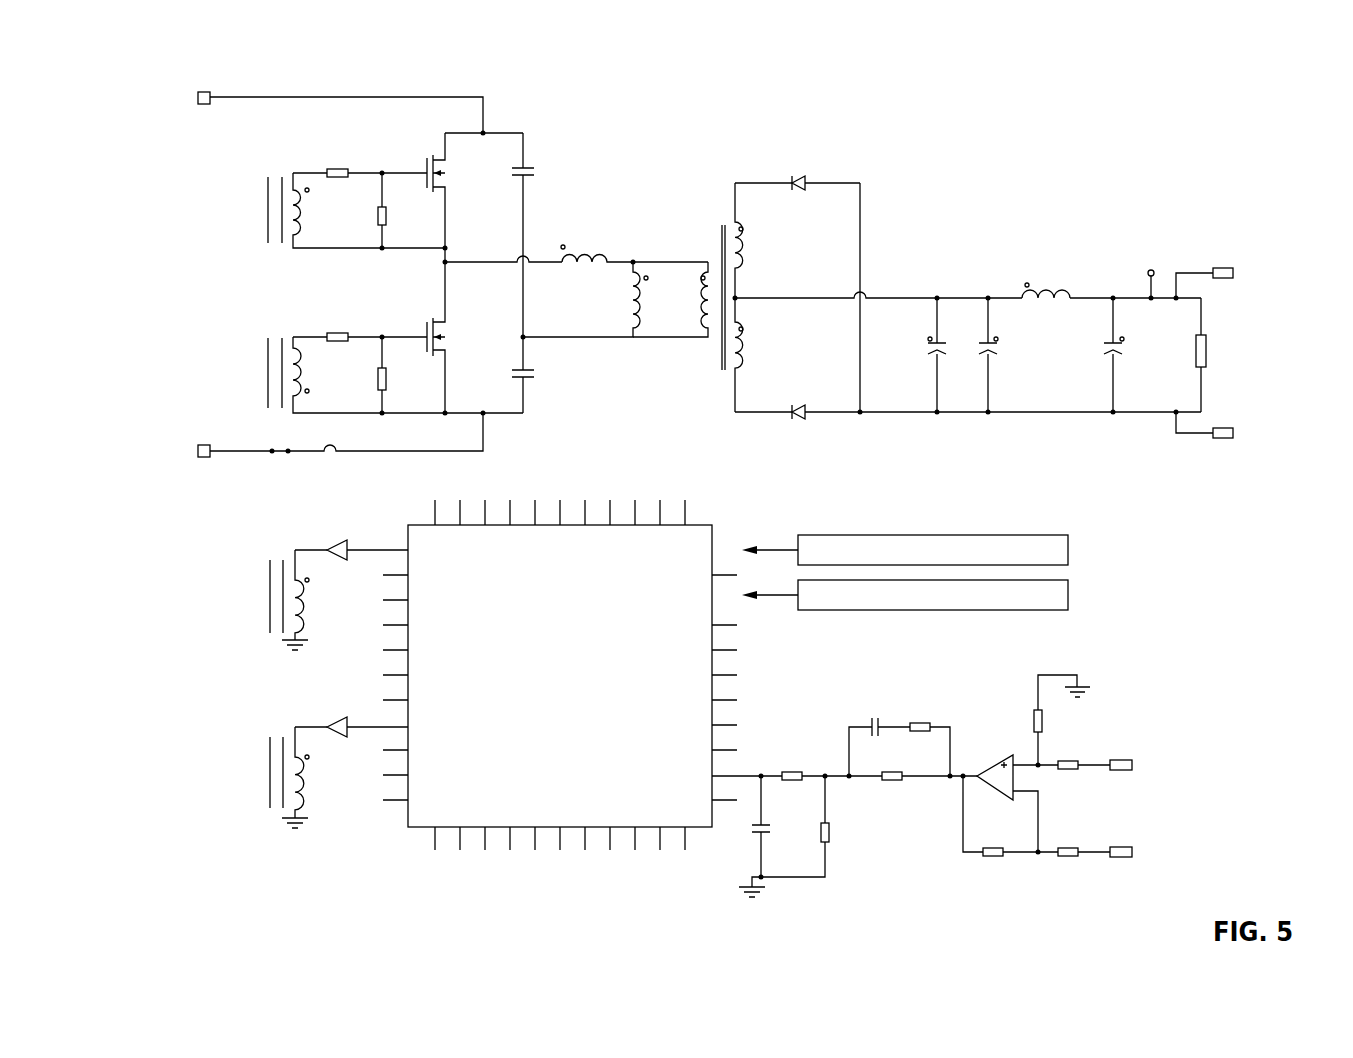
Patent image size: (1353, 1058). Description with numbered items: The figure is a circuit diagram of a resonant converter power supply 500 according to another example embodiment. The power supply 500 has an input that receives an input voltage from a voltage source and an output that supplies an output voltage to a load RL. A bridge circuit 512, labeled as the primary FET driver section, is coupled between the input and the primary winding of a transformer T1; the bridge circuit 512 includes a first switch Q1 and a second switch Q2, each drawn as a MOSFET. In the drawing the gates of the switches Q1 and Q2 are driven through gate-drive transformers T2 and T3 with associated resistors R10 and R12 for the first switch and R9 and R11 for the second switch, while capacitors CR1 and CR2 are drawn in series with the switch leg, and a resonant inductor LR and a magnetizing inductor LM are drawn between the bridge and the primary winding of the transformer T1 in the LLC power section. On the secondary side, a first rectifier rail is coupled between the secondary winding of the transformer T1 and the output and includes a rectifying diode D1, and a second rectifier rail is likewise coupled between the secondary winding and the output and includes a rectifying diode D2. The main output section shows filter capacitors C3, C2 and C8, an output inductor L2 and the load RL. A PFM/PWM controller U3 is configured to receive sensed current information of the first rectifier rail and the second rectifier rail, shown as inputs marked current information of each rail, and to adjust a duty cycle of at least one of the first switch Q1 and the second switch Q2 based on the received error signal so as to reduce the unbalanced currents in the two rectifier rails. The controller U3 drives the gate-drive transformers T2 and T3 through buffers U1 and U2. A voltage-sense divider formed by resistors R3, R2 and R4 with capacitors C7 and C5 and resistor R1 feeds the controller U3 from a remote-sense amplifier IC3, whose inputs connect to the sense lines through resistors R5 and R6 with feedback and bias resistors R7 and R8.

The resonant converter power supply 500 is at (990, 88).
The bridge circuit 512 is at (515, 102).
The first switch Q1 is at (432, 197).
The second switch Q2 is at (432, 337).
The resonant capacitor CR1 is at (546, 197).
The resonant capacitor CR2 is at (546, 337).
The gate resistor R10 is at (337, 160).
The gate resistor R12 is at (358, 210).
The gate resistor R9 is at (337, 324).
The gate resistor R11 is at (358, 375).
The gate drive transformer T2 is at (353, 196).
The gate drive transformer T3 is at (392, 360).
The resonant inductor LR is at (634, 248).
The magnetizing inductor LM is at (615, 299).
The transformer T1 is at (725, 297).
The rectifying diode D1 is at (797, 428).
The rectifying diode D2 is at (797, 169).
The output capacitor C3 is at (919, 355).
The output capacitor C2 is at (1003, 355).
The output capacitor C8 is at (1131, 355).
The output inductor L2 is at (1046, 280).
The load RL is at (1218, 355).
The PFM/PWM controller U3 is at (560, 675).
The buffer U1 is at (351, 564).
The buffer U2 is at (351, 741).
The resistor R3 is at (792, 790).
The resistor R2 is at (892, 790).
The resistor R4 is at (811, 826).
The capacitor C7 is at (746, 826).
The capacitor C5 is at (879, 747).
The resistor R1 is at (927, 749).
The remote sense amplifier IC3 is at (993, 763).
The resistor R5 is at (1067, 780).
The resistor R6 is at (1067, 866).
The resistor R7 is at (994, 866).
The resistor R8 is at (1037, 720).